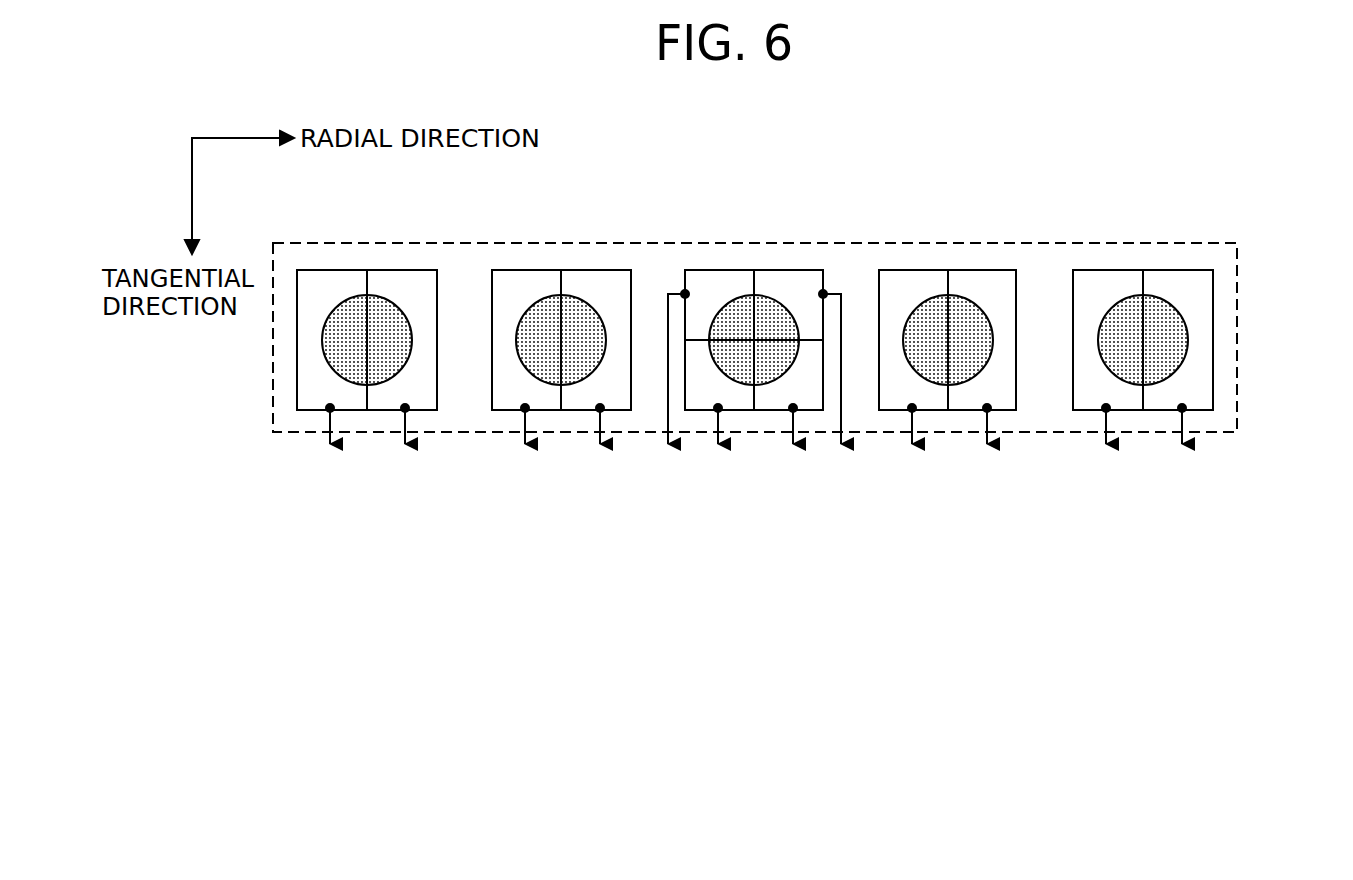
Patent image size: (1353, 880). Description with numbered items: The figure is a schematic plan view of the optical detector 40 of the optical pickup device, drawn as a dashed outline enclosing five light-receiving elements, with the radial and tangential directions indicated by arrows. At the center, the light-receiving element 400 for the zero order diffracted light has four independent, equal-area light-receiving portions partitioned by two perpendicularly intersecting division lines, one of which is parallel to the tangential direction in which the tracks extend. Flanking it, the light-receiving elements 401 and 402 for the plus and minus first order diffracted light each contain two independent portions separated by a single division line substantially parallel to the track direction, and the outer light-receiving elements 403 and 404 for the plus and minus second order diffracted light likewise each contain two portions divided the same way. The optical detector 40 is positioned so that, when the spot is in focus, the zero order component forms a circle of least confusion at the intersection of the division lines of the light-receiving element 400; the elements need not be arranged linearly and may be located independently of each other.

The optical detector 40 is at (1237, 312).
The light-receiving element for zero order diffracted light 400 is at (782, 270).
The light-receiving element for first order diffracted light 401 is at (585, 270).
The light-receiving element for first order diffracted light 402 is at (977, 270).
The light-receiving element for second order diffracted light 403 is at (391, 270).
The light-receiving element for second order diffracted light 404 is at (1172, 270).